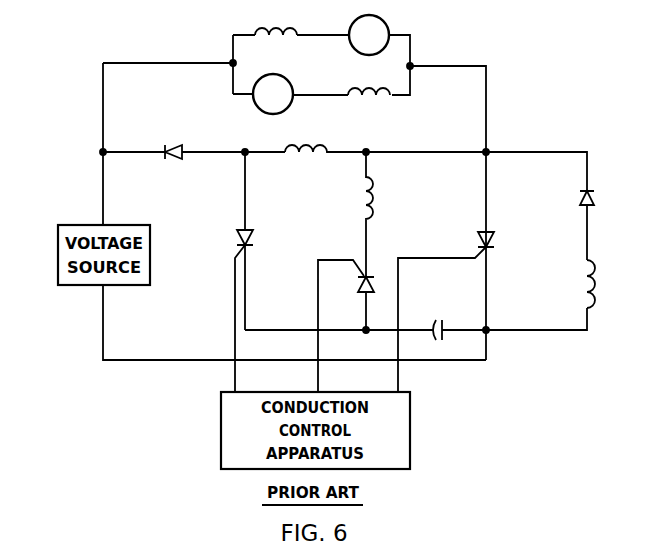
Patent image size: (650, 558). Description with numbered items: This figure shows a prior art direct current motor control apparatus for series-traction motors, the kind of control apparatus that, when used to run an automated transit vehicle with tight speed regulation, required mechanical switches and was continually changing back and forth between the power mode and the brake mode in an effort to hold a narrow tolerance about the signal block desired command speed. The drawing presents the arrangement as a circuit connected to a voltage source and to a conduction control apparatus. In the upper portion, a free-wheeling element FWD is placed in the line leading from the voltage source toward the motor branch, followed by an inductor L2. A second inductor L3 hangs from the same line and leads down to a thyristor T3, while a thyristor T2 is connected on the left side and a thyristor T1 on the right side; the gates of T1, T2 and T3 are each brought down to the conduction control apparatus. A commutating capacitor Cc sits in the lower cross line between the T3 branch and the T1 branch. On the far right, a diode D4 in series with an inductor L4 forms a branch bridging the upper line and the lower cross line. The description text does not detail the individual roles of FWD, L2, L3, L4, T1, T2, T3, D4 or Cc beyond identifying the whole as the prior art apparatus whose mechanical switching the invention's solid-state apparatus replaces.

The free-wheeling diode FWD is at (177, 142).
The inductor L2 is at (385, 166).
The inductor L3 is at (356, 214).
The inductor L4 is at (576, 284).
The thyristor T1 is at (458, 310).
The thyristor T2 is at (228, 306).
The thyristor T3 is at (346, 326).
The diode D4 is at (572, 199).
The commutating capacitor Cc is at (435, 316).